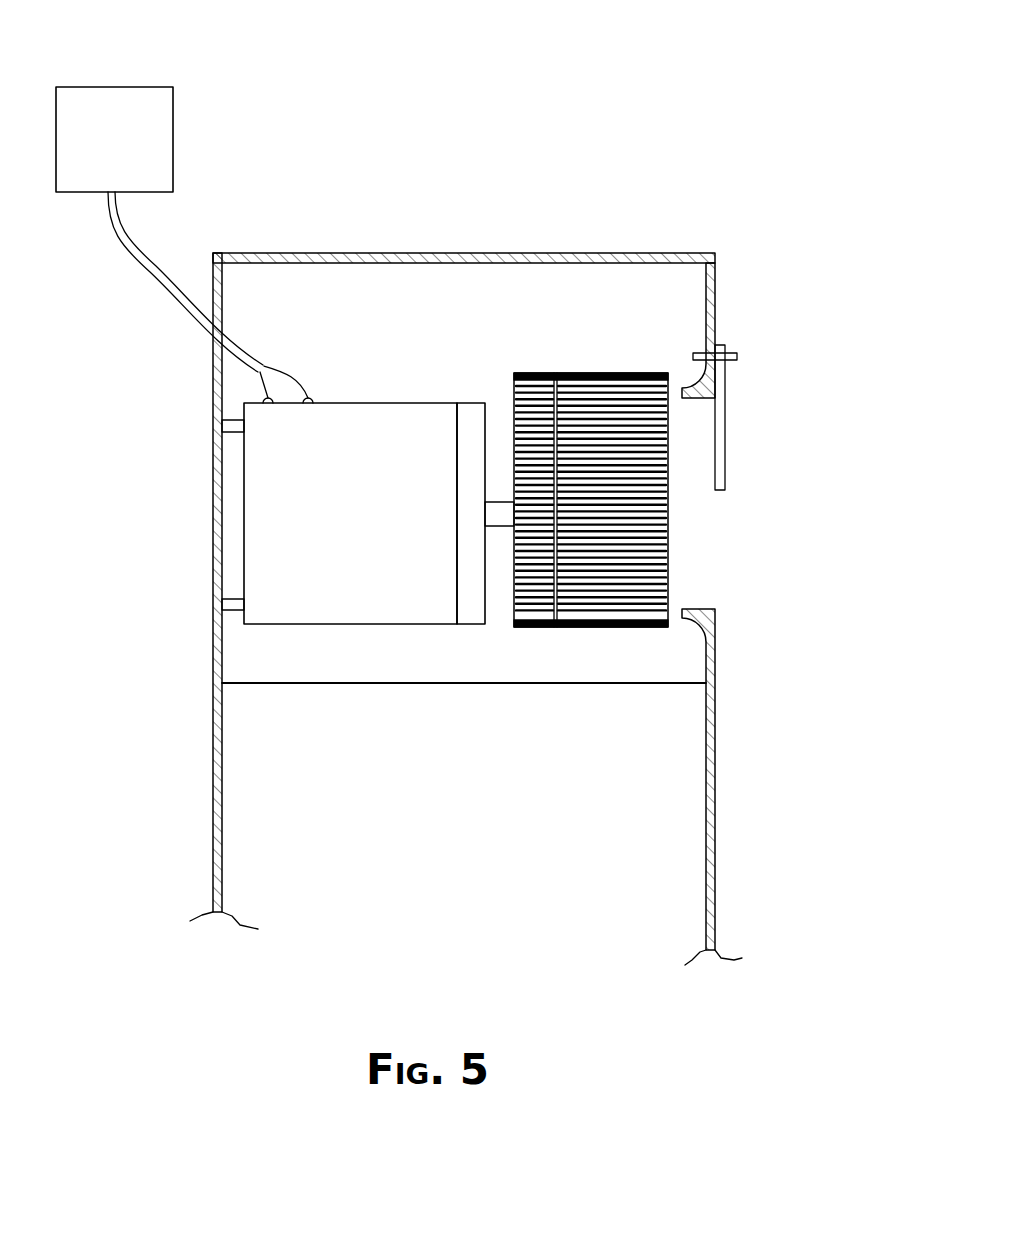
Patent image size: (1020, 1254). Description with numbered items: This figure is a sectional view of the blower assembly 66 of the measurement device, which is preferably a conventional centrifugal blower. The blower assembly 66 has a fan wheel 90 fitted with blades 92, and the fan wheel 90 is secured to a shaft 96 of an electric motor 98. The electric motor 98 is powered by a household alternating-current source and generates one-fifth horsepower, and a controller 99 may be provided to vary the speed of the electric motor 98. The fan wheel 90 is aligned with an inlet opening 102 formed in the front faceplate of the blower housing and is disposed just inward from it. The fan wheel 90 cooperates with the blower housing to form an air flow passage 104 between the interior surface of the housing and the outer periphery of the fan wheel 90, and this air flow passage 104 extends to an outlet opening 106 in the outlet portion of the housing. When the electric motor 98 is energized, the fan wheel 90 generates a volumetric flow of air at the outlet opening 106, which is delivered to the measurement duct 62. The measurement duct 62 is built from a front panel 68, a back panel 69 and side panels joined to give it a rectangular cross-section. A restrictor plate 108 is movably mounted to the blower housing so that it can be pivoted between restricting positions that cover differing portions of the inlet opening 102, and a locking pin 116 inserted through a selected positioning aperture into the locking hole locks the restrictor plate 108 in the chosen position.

The measurement duct 62 is at (784, 787).
The blower assembly 66 is at (499, 529).
The front panel 68 is at (710, 905).
The back panel 69 is at (218, 795).
The fan wheel 90 is at (672, 475).
The blades 92 is at (605, 557).
The shaft 96 is at (500, 500).
The electric motor 98 is at (286, 523).
The controller 99 is at (100, 118).
The inlet opening 102 is at (728, 565).
The air flow passage 104 is at (603, 320).
The outlet opening 106 is at (552, 650).
The restrictor plate 108 is at (718, 456).
The locking pin 116 is at (738, 364).